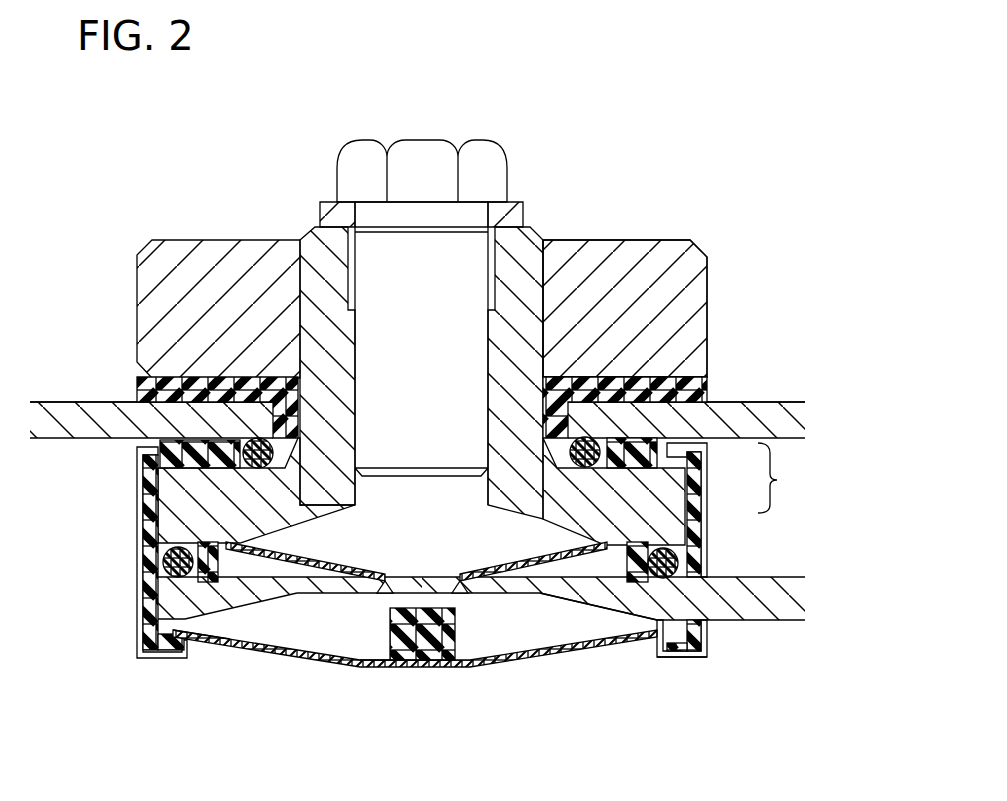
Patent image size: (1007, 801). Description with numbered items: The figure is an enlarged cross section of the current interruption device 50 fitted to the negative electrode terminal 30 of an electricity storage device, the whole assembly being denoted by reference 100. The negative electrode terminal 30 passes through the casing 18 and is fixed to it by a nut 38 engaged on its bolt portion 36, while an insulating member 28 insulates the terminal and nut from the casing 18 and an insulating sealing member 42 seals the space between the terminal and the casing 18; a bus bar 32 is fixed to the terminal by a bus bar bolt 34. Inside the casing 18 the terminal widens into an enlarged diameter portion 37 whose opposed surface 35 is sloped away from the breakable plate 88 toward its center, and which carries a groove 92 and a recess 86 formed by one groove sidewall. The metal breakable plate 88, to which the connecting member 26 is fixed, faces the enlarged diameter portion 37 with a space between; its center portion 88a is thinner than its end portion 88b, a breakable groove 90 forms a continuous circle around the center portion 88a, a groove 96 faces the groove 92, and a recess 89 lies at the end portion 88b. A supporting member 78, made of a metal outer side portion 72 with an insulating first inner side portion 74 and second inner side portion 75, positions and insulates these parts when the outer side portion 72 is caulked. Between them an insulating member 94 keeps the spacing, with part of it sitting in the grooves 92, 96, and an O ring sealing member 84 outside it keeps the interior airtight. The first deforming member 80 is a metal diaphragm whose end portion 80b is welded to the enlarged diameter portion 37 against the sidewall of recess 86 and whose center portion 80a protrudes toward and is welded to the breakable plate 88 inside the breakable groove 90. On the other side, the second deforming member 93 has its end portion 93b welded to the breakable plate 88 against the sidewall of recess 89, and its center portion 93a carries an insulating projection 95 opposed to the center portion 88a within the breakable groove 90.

The fixing structure 100 is at (660, 122).
The casing 18 is at (790, 408).
The connecting member 26 is at (770, 600).
The insulating member 28 is at (707, 392).
The negative electrode terminal 30 is at (702, 199).
The bus bar 32 is at (512, 215).
The bus bar bolt 34 is at (426, 160).
The opposed surface 35 is at (507, 520).
The bolt portion 36 is at (318, 258).
The enlarged diameter portion 37 is at (622, 497).
The nut 38 is at (156, 326).
The sealing member 42 is at (580, 445).
The current interruption device 50 is at (750, 540).
The outer side portion 72 is at (703, 498).
The first inner side portion 74 is at (703, 462).
The second inner side portion 75 is at (680, 658).
The supporting member 78 is at (782, 478).
The first deforming member 80 is at (288, 548).
The center portion 80a is at (417, 577).
The end portion 80b is at (233, 542).
The sealing member 84 is at (152, 565).
The recess 86 is at (209, 636).
The breakable plate 88 is at (258, 583).
The center portion 88a is at (394, 662).
The end portion 88b is at (713, 620).
The recess 89 is at (713, 630).
The breakable groove 90 is at (474, 606).
The groove 92 is at (575, 600).
The second deforming member 93 is at (565, 650).
The center portion 93a is at (425, 664).
The end portion 93b is at (688, 648).
The insulating member 94 is at (636, 570).
The projection 95 is at (442, 632).
The groove 96 is at (707, 563).